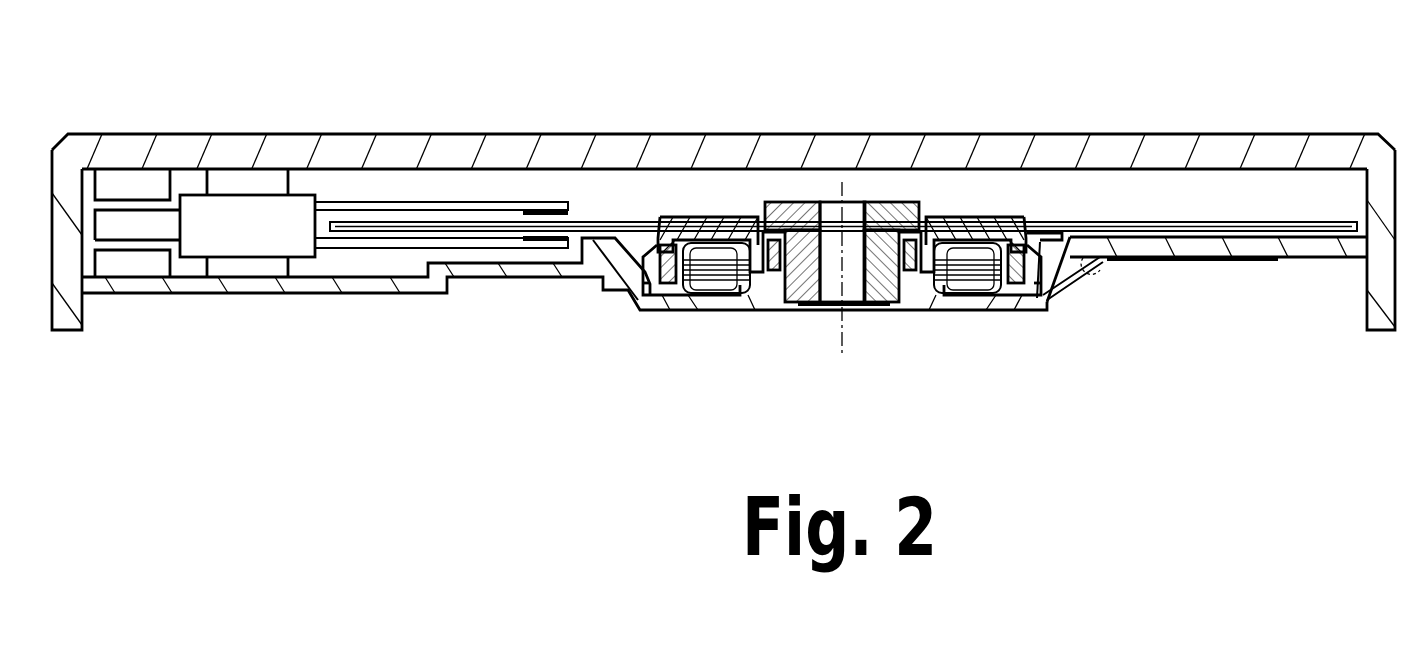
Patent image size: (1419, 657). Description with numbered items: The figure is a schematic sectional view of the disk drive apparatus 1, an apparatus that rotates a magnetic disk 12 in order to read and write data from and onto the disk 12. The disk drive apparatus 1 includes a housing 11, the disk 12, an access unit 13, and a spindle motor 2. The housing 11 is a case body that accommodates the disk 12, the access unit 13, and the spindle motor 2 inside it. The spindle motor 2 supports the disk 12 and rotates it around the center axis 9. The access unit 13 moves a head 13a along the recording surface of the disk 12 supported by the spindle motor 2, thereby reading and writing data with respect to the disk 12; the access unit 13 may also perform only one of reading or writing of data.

The disk drive apparatus 1 is at (723, 169).
The spindle motor 2 is at (842, 212).
The center axis 9 is at (843, 340).
The housing 11 is at (1232, 146).
The magnetic disk 12 is at (1123, 224).
The access unit 13 is at (331, 217).
The head 13a is at (538, 238).